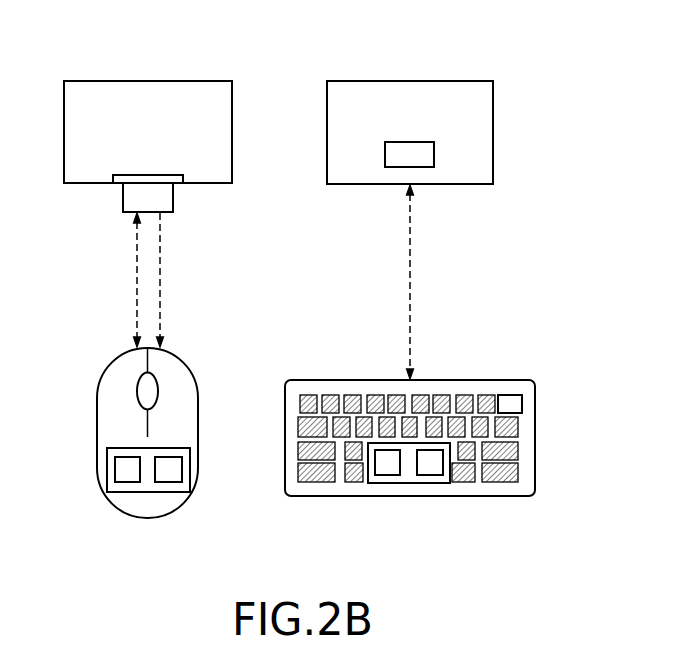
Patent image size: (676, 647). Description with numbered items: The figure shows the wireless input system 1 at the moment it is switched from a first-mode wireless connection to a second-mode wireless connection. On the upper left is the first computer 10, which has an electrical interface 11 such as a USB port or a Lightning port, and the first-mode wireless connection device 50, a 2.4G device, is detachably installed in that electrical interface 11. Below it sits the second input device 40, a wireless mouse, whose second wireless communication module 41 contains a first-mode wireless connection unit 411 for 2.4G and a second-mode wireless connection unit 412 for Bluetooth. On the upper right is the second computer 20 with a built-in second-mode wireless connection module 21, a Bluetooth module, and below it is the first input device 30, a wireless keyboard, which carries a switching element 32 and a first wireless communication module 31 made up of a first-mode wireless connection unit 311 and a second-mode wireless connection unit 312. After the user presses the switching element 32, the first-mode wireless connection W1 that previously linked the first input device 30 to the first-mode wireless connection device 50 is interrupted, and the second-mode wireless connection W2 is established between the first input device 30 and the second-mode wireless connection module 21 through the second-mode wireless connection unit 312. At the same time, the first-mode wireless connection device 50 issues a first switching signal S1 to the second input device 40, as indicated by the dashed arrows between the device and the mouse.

The wireless input system 1 is at (62, 23).
The first computer 10 is at (180, 81).
The electrical interface 11 is at (147, 175).
The first-mode wireless connection device 50 is at (123, 197).
The first-mode wireless connection W1 is at (135, 275).
The first switching signal S1 is at (158, 287).
The second input device 40 is at (97, 405).
The second wireless communication module 41 is at (107, 458).
The first-mode wireless connection unit 411 is at (108, 493).
The second-mode wireless connection unit 412 is at (190, 493).
The second computer 20 is at (440, 81).
The second-mode wireless connection module 21 is at (410, 142).
The second-mode wireless connection W2 is at (410, 280).
The first input device 30 is at (462, 380).
The switching element 32 is at (523, 403).
The first wireless communication module 31 is at (410, 483).
The first-mode wireless connection unit 311 is at (435, 476).
The second-mode wireless connection unit 312 is at (378, 480).